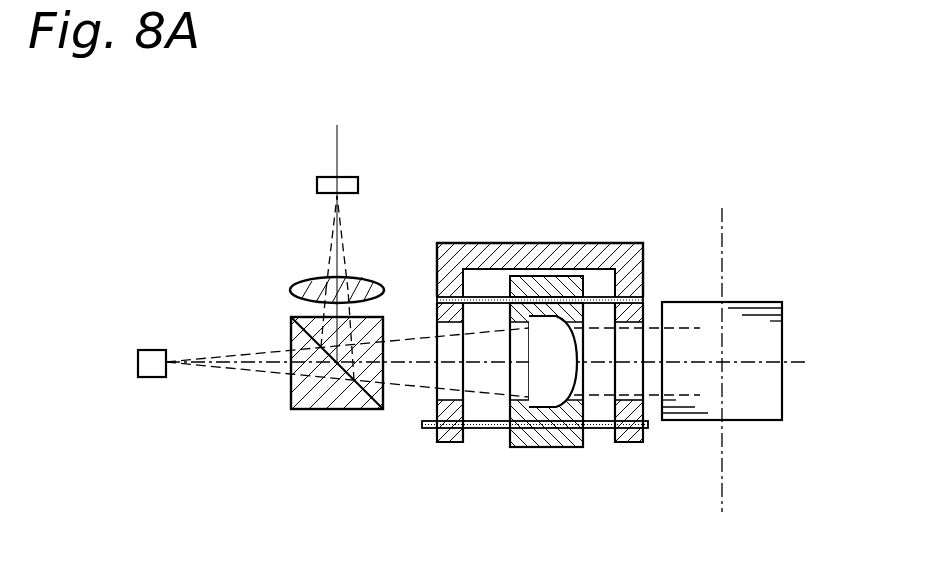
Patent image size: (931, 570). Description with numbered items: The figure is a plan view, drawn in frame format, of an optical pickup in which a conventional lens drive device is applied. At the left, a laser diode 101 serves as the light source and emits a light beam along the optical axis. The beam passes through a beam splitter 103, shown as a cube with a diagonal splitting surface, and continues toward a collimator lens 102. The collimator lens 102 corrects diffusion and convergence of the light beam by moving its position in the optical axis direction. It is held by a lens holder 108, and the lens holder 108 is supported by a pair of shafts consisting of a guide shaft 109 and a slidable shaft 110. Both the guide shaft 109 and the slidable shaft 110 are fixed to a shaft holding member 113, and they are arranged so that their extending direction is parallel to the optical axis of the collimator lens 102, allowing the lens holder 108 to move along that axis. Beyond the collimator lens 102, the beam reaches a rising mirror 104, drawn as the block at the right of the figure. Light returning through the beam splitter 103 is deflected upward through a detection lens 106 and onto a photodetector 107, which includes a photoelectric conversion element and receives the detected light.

The laser diode 101 is at (153, 348).
The collimator lens 102 is at (537, 401).
The beam splitter 103 is at (307, 410).
The rising mirror 104 is at (775, 407).
The detection lens 106 is at (305, 293).
The photodetector 107 is at (317, 185).
The lens holder 108 is at (533, 435).
The guide shaft 109 is at (600, 295).
The slidable shaft 110 is at (600, 430).
The shaft holding member 113 is at (478, 243).